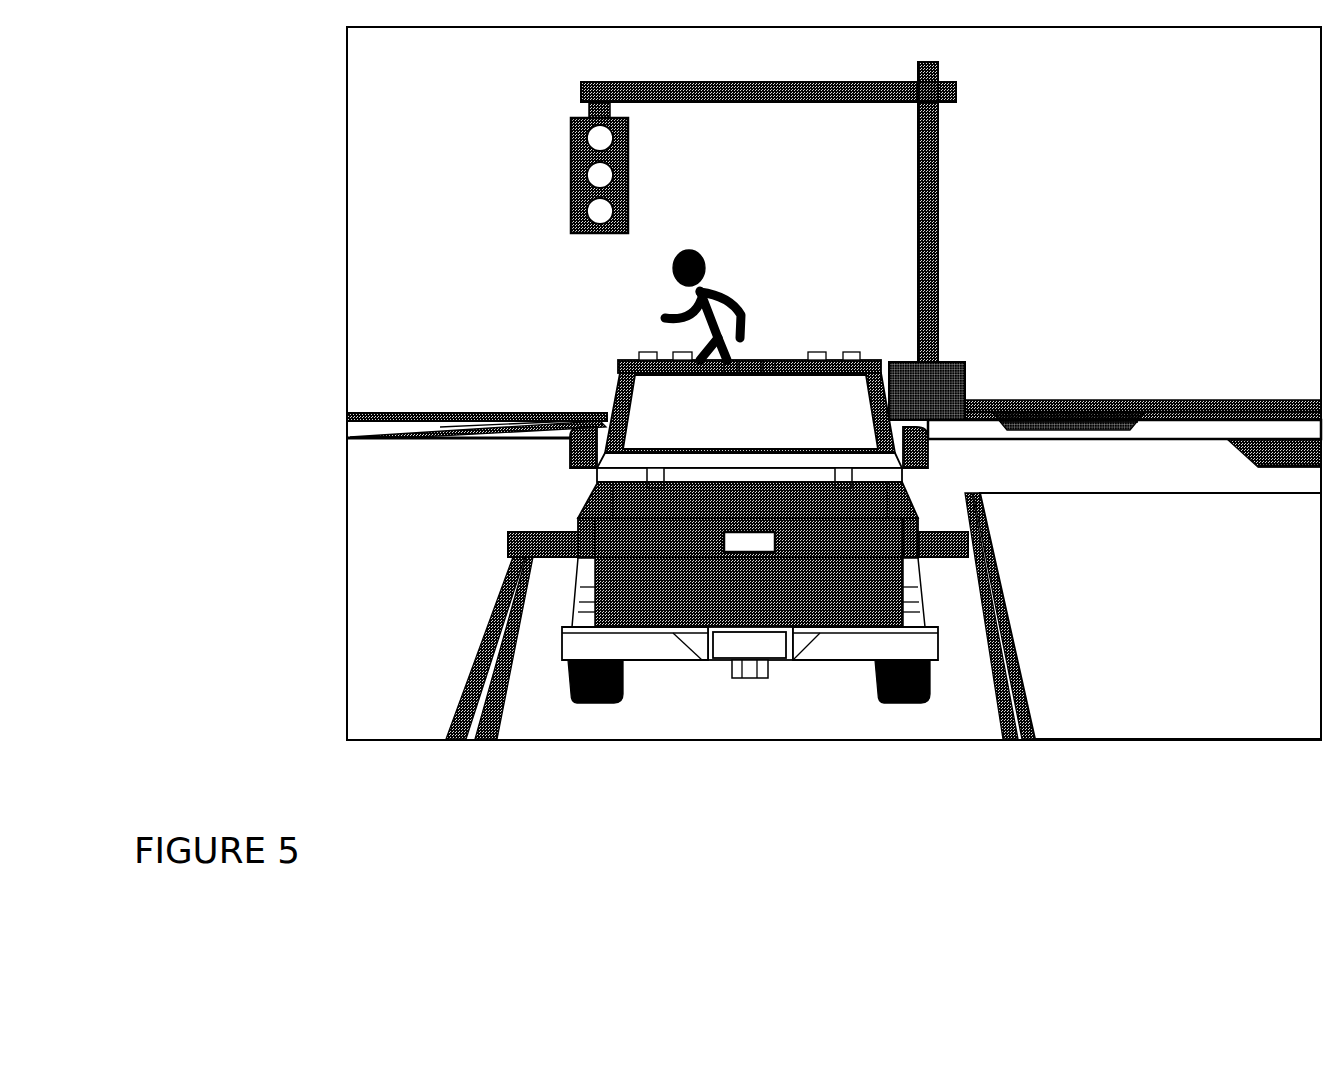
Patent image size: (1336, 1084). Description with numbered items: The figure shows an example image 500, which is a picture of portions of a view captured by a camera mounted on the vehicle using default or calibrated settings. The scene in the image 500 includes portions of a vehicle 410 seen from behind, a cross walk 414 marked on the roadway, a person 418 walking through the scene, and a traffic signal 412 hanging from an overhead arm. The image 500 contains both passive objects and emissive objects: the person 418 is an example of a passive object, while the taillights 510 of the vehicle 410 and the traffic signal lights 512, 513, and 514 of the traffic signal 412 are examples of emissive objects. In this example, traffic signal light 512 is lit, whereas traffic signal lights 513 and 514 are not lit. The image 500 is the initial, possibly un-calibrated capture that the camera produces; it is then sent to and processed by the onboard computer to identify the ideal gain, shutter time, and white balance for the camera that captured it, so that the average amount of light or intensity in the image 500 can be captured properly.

The image 500 is at (235, 806).
The vehicle 410 is at (583, 527).
The traffic signal 412 is at (596, 241).
The cross walk 414 is at (346, 440).
The person 418 is at (710, 338).
The taillights 510 is at (913, 612).
The traffic signal light 512 is at (570, 142).
The traffic signal light 513 is at (570, 182).
The traffic signal light 514 is at (570, 215).